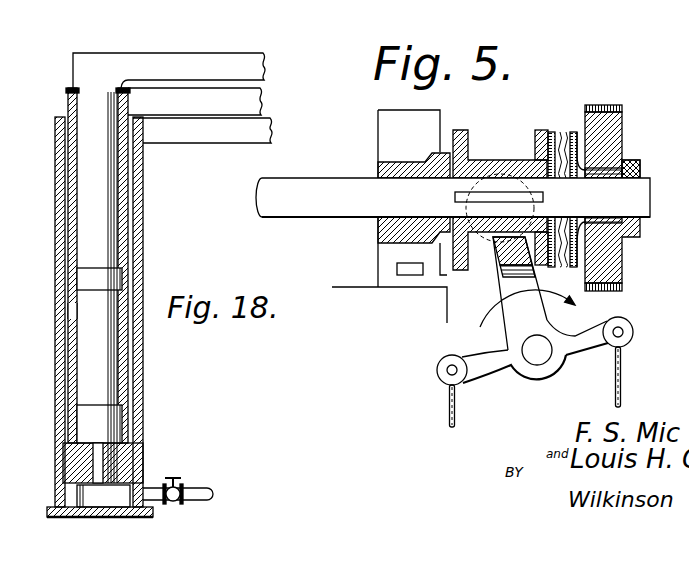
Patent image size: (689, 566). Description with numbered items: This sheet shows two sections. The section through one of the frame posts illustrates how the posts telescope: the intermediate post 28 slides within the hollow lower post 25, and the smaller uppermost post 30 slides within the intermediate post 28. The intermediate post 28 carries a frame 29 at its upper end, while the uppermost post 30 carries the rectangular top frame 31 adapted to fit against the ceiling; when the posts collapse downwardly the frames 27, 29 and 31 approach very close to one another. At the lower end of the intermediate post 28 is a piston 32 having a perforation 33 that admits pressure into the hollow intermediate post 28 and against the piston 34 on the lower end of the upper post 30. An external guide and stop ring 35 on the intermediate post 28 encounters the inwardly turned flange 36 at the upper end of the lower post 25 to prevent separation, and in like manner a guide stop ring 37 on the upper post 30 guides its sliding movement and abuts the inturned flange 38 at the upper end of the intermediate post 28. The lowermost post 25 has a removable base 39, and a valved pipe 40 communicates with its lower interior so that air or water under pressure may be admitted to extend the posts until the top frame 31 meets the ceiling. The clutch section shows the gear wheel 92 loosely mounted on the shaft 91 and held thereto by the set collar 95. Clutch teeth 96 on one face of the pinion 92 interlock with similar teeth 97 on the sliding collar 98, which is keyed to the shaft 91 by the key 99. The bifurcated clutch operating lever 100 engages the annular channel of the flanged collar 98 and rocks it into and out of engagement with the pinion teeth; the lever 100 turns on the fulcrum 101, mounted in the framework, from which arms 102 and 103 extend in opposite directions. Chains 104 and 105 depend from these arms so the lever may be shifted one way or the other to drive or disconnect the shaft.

In FIG. 18, the hollow lower post 25 is at (143, 228).
In FIG. 18, the frame 27 is at (262, 131).
In FIG. 18, the intermediate post 28 is at (130, 213).
In FIG. 18, the frame 29 is at (250, 98).
In FIG. 18, the uppermost post 30 is at (112, 256).
In FIG. 18, the rectangular top frame 31 is at (256, 54).
In FIG. 18, the piston 32 is at (62, 452).
In FIG. 18, the perforation 33 is at (100, 462).
In FIG. 18, the piston 34 is at (120, 418).
In FIG. 18, the guide and stop ring 35 is at (143, 318).
In FIG. 18, the inwardly turned flange 36 is at (57, 126).
In FIG. 18, the guide stop ring 37 is at (84, 280).
In FIG. 18, the inturned flange 38 is at (70, 89).
In FIG. 18, the removable base 39 is at (140, 516).
In FIG. 18, the valved pipe 40 is at (206, 490).
In FIG. 5, the shaft 91 is at (308, 188).
In FIG. 5, the gear wheel 92 is at (622, 112).
In FIG. 5, the set collar 95 is at (640, 168).
In FIG. 5, the clutch teeth 96 is at (573, 132).
In FIG. 5, the teeth 97 is at (548, 132).
In FIG. 5, the sliding collar 98 is at (472, 165).
In FIG. 5, the key 99 is at (455, 197).
In FIG. 5, the clutch operating lever 100 is at (520, 305).
In FIG. 5, the fulcrum 101 is at (537, 360).
In FIG. 5, the arm 102 is at (490, 375).
In FIG. 5, the arm 103 is at (595, 340).
In FIG. 5, the chain 104 is at (450, 412).
In FIG. 5, the chain 105 is at (624, 395).